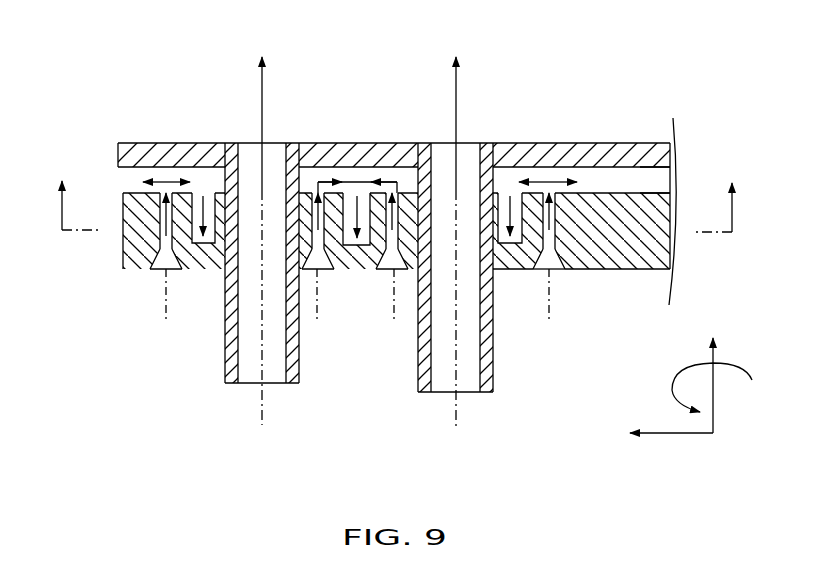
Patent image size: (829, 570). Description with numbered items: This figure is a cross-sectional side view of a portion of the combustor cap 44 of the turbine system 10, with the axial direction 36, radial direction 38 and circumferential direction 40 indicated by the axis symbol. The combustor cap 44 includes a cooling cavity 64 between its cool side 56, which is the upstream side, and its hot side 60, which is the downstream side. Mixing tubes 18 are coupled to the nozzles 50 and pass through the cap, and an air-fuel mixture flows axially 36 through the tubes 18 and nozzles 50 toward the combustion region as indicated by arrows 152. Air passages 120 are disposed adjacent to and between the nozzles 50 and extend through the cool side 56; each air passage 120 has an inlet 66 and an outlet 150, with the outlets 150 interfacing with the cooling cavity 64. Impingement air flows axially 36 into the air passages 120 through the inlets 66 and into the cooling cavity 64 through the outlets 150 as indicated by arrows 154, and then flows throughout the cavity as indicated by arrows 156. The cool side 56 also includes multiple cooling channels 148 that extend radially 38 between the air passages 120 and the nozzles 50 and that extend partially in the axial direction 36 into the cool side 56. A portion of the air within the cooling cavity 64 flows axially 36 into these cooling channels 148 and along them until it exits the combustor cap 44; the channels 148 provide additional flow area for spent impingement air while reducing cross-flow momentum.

The combustor cap 44 is at (122, 42).
The hot side 60 is at (612, 142).
The cool side 56 is at (647, 270).
The cooling cavity 64 is at (653, 178).
The inlets 66 is at (555, 273).
The nozzles 50 is at (252, 162).
The mixing tubes 18 is at (298, 375).
The arrows 152 is at (260, 82).
The arrows 156 is at (184, 168).
The outlets 150 is at (123, 183).
The cooling channels 148 is at (360, 205).
The arrows 154 is at (154, 226).
The air passages 120 is at (156, 270).
The turbine system 10 is at (398, 191).
The axial axis or direction 36 is at (713, 390).
The radial axis or direction 38 is at (675, 432).
The circumferential axis or direction 40 is at (731, 363).